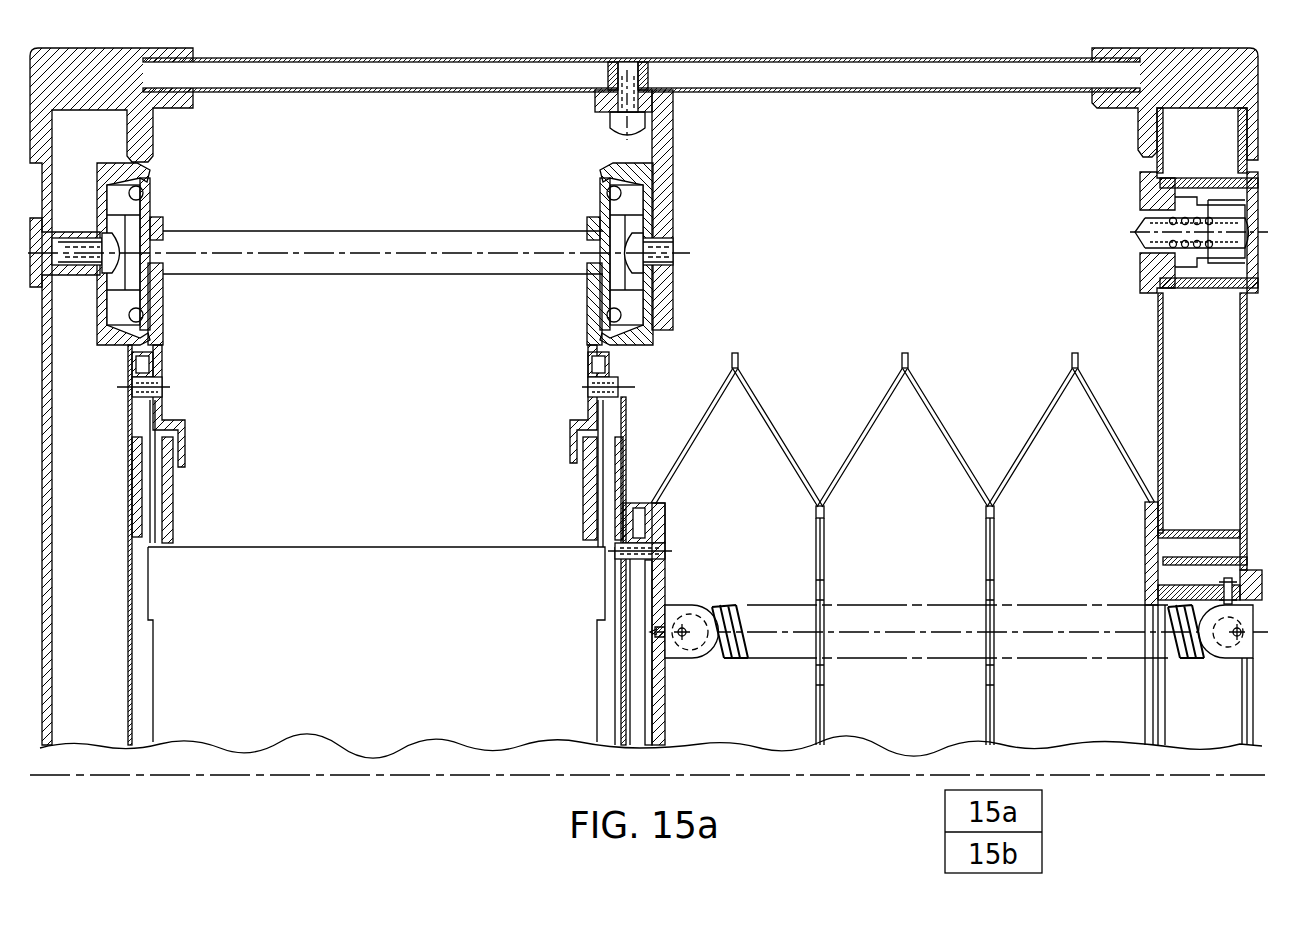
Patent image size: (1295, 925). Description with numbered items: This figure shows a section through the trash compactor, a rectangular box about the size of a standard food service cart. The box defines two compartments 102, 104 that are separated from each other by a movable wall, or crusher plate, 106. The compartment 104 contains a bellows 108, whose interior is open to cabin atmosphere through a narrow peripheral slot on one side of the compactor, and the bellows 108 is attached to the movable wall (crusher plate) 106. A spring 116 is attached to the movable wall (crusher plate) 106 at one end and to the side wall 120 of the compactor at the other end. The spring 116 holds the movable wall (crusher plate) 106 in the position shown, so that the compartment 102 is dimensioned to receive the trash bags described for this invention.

The compartment 102 is at (362, 675).
The compartment 104 is at (888, 543).
The movable wall (crusher plate) 106 is at (640, 656).
The bellows 108 is at (780, 438).
The spring 116 is at (734, 607).
The side wall 120 is at (1263, 572).